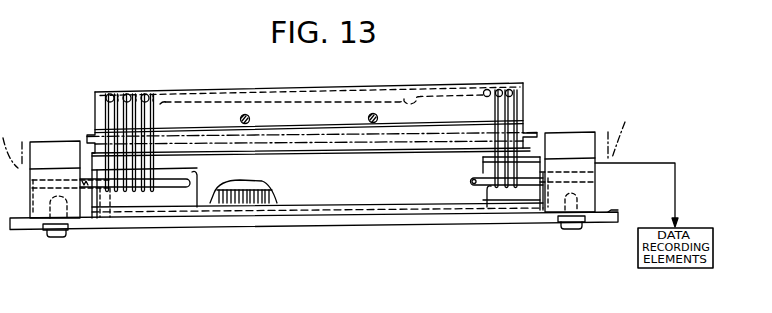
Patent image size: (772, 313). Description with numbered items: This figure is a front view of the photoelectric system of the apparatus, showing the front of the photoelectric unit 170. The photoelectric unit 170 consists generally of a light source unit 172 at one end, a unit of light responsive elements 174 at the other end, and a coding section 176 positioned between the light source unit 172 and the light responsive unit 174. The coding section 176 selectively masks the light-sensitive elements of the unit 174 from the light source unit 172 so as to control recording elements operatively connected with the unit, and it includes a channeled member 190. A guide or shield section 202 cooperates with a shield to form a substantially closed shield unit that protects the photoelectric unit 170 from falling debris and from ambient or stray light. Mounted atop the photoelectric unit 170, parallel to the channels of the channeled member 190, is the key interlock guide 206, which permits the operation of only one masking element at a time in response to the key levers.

The photoelectric unit 170 is at (311, 134).
The light source unit 172 is at (52, 136).
The unit of light responsive elements 174 is at (569, 124).
The coding section 176 is at (207, 84).
The channeled member 190 is at (243, 204).
The guide or shield section 202 is at (160, 165).
The key interlock guide 206 is at (418, 99).